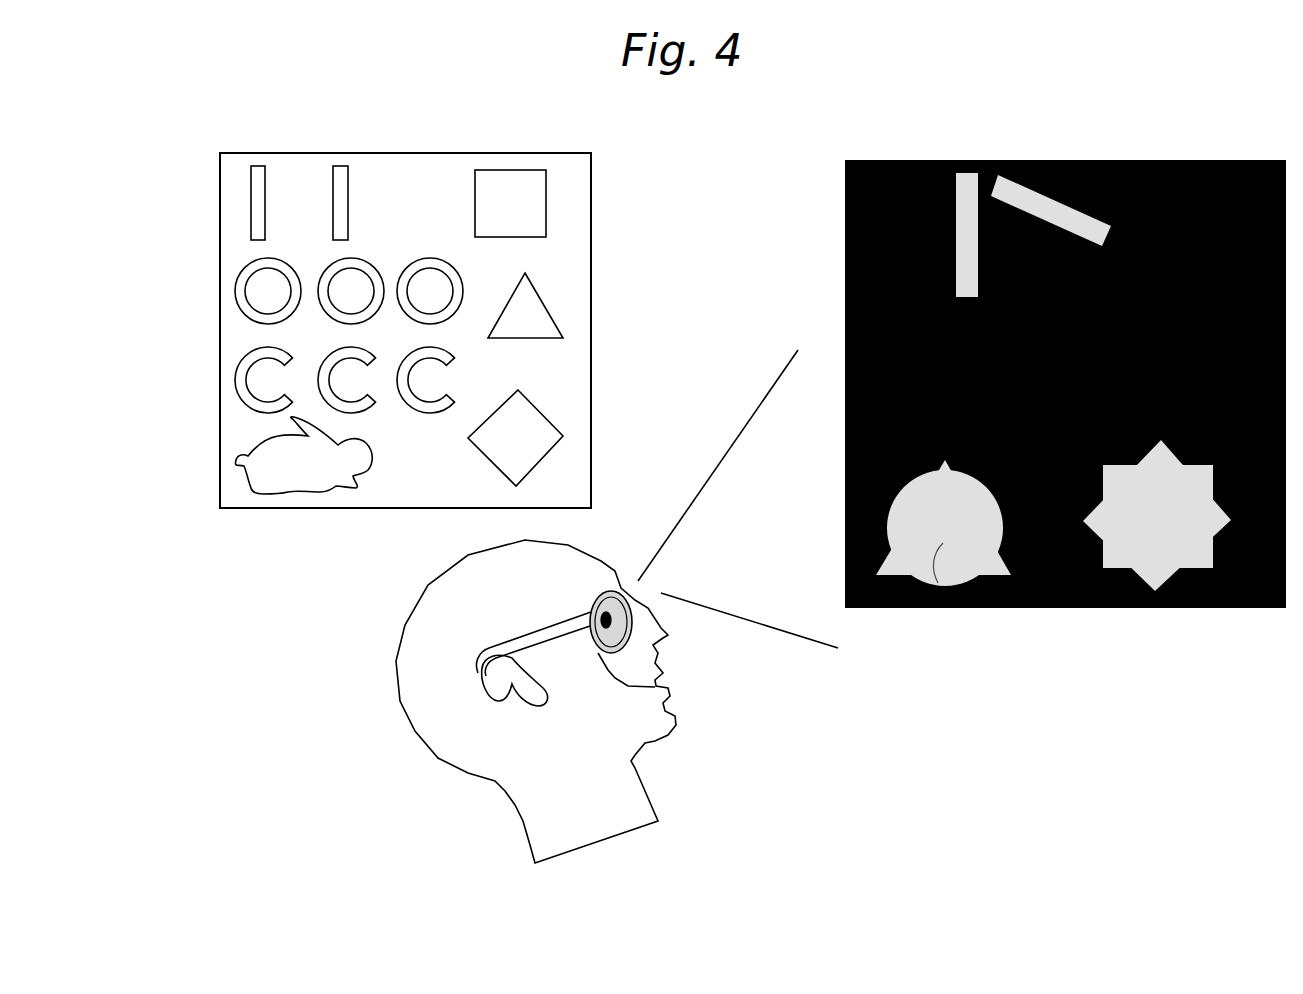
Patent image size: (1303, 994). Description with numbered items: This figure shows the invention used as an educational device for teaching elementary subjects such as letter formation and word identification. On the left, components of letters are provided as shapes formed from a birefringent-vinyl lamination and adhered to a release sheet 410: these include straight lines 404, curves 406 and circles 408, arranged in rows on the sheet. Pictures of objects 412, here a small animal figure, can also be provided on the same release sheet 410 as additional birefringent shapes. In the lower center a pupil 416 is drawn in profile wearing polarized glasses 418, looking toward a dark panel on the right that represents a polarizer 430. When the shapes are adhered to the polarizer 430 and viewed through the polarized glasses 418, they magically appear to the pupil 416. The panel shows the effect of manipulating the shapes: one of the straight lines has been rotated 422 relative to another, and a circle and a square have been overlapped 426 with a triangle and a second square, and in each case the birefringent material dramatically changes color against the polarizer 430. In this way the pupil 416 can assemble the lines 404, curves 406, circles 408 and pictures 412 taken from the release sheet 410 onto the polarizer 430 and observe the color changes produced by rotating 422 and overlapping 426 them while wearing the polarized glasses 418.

The straight lines 404 is at (230, 195).
The curves 406 is at (233, 385).
The circles 408 is at (229, 296).
The release sheet 410 is at (267, 152).
The pictures of objects 412 is at (236, 474).
The pupil 416 is at (410, 690).
The polarized glasses 418 is at (655, 677).
The rotated shapes 422 is at (1002, 153).
The overlapped shapes 426 is at (977, 600).
The polarizer 430 is at (837, 253).